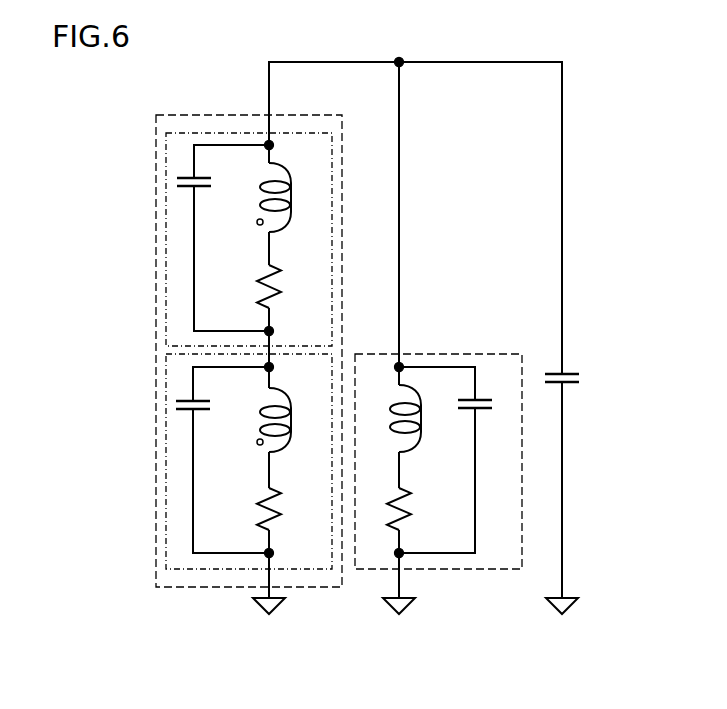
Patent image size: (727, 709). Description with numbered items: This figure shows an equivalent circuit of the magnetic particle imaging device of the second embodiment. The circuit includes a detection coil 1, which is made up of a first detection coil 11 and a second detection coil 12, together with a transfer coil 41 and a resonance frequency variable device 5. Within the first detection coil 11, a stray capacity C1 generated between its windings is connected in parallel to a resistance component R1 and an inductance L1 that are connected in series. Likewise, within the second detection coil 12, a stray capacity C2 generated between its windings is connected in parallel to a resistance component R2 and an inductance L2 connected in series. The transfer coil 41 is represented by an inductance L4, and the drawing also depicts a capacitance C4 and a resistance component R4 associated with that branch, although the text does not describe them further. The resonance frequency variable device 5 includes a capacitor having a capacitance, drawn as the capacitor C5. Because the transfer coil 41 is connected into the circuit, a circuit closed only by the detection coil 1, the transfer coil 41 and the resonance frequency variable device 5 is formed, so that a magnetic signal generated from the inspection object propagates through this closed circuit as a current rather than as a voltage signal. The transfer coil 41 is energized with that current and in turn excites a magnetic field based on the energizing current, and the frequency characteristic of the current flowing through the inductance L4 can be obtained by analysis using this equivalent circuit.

The detection coil 1 is at (155, 115).
The first detection coil 11 is at (165, 243).
The second detection coil 12 is at (165, 470).
The transfer coil 41 is at (473, 354).
The resonance frequency variable device 5 is at (594, 376).
The stray capacity C1 is at (201, 169).
The inductance L1 is at (286, 188).
The resistance component R1 is at (287, 281).
The stray capacity C2 is at (202, 392).
The inductance L2 is at (286, 409).
The resistance component R2 is at (287, 502).
The inductance L4 is at (419, 409).
The capacitor C4 is at (484, 391).
The resistor R4 is at (418, 502).
The capacitor C5 is at (572, 365).